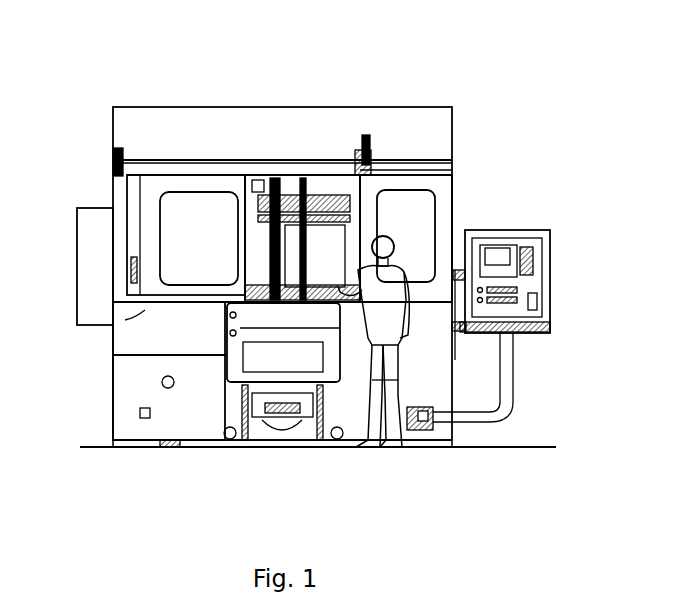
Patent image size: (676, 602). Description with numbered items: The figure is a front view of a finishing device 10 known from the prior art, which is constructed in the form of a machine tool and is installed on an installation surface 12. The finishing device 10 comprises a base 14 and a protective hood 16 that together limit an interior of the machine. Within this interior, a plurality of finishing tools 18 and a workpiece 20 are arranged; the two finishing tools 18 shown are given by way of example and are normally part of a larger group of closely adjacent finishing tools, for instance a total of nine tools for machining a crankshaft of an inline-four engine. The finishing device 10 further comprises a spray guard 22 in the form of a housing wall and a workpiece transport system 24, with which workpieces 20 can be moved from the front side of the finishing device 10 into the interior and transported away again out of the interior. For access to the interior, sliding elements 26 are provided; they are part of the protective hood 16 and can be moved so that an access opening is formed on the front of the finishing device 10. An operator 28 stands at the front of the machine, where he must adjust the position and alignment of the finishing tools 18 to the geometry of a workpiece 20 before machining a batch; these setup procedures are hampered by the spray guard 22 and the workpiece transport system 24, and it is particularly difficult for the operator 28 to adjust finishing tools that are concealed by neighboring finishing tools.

The finishing device 10 is at (498, 112).
The installation surface 12 is at (544, 447).
The base 14 is at (116, 392).
The protective hood 16 is at (113, 131).
The finishing tools 18 is at (256, 247).
The workpiece 20 is at (318, 270).
The spray guard 22 is at (113, 348).
The workpiece transport system 24 is at (303, 365).
The sliding elements 26 is at (113, 192).
The operator 28 is at (372, 452).